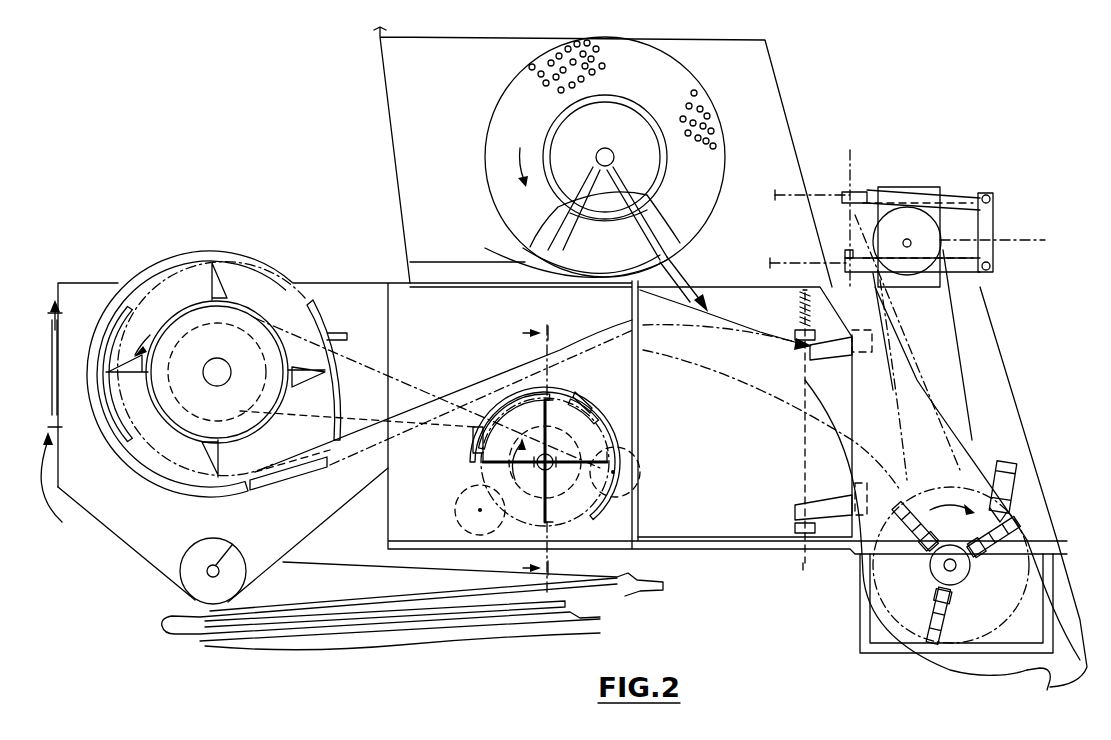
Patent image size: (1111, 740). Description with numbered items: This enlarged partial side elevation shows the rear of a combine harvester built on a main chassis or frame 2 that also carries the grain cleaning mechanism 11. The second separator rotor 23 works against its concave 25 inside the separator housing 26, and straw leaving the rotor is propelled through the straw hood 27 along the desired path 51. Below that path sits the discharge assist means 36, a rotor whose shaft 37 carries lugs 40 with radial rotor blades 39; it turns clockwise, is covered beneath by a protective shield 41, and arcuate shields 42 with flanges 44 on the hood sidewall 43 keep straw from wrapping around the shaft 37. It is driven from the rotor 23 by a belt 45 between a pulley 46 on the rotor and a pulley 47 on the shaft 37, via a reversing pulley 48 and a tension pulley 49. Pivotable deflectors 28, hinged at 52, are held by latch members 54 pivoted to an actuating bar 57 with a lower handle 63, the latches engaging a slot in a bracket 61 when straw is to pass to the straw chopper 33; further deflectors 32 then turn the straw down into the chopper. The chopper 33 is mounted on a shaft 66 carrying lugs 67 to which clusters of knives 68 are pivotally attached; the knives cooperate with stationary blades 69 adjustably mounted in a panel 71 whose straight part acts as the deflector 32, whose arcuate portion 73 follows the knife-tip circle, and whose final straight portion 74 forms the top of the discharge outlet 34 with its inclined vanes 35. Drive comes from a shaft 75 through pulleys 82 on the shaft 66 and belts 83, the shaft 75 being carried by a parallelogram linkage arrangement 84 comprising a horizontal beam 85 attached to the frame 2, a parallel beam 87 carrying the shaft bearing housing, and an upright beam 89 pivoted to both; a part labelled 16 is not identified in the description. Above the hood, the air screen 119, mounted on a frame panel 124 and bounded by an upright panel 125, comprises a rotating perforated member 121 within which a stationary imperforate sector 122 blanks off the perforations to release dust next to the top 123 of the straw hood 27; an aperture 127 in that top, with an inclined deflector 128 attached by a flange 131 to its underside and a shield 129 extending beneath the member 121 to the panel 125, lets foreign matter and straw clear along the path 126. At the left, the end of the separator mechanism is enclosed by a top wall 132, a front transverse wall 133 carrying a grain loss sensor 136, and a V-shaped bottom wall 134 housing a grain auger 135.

The main chassis or frame 2 is at (1068, 548).
The grain cleaning mechanism 11 is at (588, 650).
The drive shaft 16 is at (790, 194).
The second rotor or cylinder 23 is at (262, 298).
The concave 25 is at (175, 488).
The separator housing 26 is at (200, 252).
The straw hood 27 is at (420, 312).
The pivotable deflectors 28 is at (711, 439).
The further deflectors 32 is at (912, 385).
The straw choppers 33 is at (1033, 507).
The discharge outlets 34 is at (1008, 668).
The inclined vanes 35 is at (1032, 672).
The discharge assist means 36 is at (573, 390).
The shaft 37 is at (528, 466).
The rotor blades 39 is at (549, 405).
The lugs 40 is at (549, 452).
The protective shield 41 is at (470, 478).
The arcuate shields 42 is at (592, 397).
The sidewall 43 is at (510, 580).
The flange 44 is at (596, 416).
The belt 45 is at (412, 385).
The pulley 46 is at (188, 402).
The pulley 47 is at (470, 455).
The reversing pulley 48 is at (640, 460).
The tension pulley 49 is at (455, 512).
The path of the straw 51 is at (583, 345).
The hinges 52 is at (640, 295).
The latch members 54 is at (845, 355).
The actuating bar 57 is at (800, 478).
The bracket 61 is at (875, 343).
The handle 63 is at (808, 568).
The shafts 66 is at (940, 568).
The lugs 67 is at (962, 572).
The knives 68 is at (1000, 530).
The stationary blades 69 is at (1012, 470).
The panel 71 is at (960, 432).
The arcuate portion 73 is at (1030, 535).
The straight portion 74 is at (1078, 660).
The shaft 75 is at (907, 237).
The pulleys 82 is at (928, 590).
The belts 83 is at (970, 352).
The parallelogram linkage arrangement 84 is at (944, 186).
The horizontal beam 85 is at (965, 200).
The beam 87 is at (985, 272).
The upright beam 89 is at (993, 256).
The air screen 119 is at (728, 99).
The perforated member 121 is at (716, 152).
The stationary sector 122 is at (640, 240).
The top 123 is at (752, 283).
The panel 124 is at (428, 105).
The panel 125 is at (412, 170).
The path 126 is at (735, 332).
The aperture 127 is at (655, 268).
The deflector 128 is at (675, 280).
The shield 129 is at (443, 262).
The flange 131 is at (722, 301).
The top wall 132 is at (110, 290).
The front transversely extending wall 133 is at (58, 300).
The bottom wall 134 is at (150, 555).
The grain auger 135 is at (243, 555).
The grain loss sensor 136 is at (67, 494).